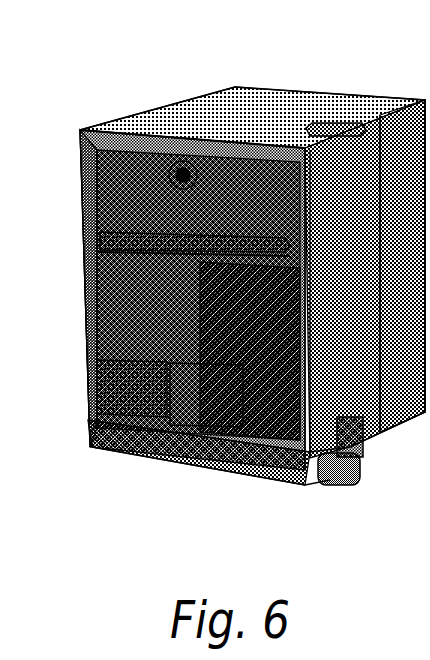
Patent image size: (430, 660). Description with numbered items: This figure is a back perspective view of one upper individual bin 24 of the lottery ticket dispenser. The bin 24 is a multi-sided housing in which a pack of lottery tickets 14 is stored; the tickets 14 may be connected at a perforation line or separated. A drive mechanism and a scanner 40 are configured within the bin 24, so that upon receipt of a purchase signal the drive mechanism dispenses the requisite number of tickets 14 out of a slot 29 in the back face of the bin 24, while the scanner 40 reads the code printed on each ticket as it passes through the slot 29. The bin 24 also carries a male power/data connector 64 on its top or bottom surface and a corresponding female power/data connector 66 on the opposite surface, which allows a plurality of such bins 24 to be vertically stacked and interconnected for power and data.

The upper individual bin 24 is at (284, 96).
The lottery tickets 14 is at (112, 308).
The slot 29 is at (112, 253).
The scanner 40 is at (202, 415).
The female power/data connector 66 is at (340, 128).
The male power/data connector 64 is at (352, 482).